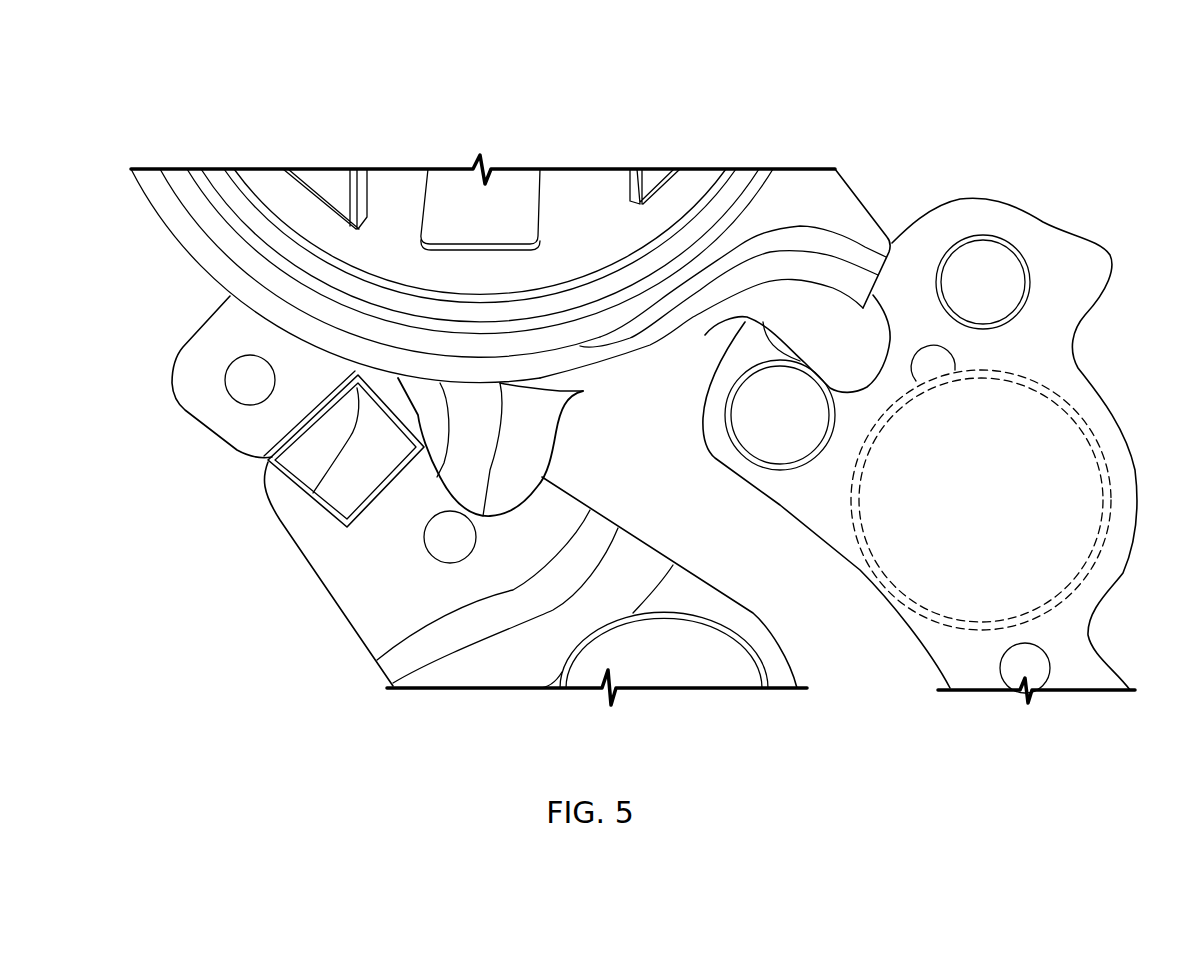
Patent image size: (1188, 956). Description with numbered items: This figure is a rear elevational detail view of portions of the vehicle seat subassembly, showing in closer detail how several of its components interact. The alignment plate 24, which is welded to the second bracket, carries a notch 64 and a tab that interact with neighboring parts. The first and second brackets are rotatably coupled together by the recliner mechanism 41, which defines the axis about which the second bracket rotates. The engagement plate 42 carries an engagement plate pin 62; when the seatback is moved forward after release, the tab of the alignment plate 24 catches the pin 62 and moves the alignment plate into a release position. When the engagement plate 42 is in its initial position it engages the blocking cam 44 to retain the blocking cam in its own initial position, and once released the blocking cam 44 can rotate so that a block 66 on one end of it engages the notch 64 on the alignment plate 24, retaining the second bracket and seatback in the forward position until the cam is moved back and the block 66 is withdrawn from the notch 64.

The alignment plate 24 is at (575, 392).
The recliner mechanism 41 is at (600, 188).
The engagement plate 42 is at (1047, 323).
The blocking cam 44 is at (463, 672).
The engagement plate pin 62 is at (770, 447).
The notch 64 is at (267, 462).
The block 66 is at (333, 473).